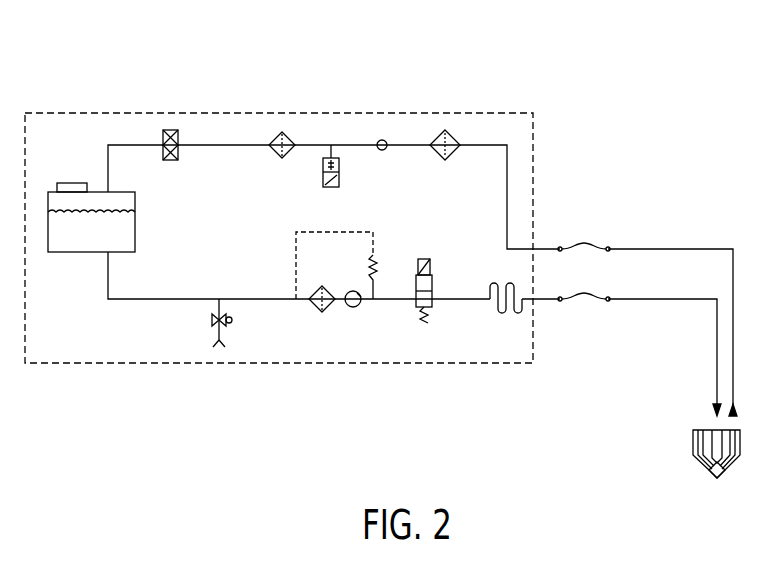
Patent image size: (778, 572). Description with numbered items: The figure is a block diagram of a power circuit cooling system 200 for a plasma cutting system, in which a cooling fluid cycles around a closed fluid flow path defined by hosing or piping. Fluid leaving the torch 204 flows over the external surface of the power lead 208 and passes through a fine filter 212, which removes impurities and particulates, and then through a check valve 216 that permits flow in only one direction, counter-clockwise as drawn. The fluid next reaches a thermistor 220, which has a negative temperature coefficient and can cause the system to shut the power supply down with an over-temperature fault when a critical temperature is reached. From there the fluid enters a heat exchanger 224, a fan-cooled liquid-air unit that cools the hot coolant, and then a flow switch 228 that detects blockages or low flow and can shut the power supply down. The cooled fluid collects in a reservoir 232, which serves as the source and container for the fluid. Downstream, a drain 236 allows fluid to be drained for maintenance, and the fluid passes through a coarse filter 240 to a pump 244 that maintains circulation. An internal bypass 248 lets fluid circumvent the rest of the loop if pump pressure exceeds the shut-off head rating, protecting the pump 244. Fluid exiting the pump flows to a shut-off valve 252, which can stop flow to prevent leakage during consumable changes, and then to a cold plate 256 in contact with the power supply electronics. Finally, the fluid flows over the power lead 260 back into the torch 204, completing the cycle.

The power circuit cooling system 200 is at (593, 70).
The torch 204 is at (696, 457).
The power lead 208 is at (646, 248).
The fine filter 212 is at (452, 134).
The check valve 216 is at (384, 139).
The thermistor 220 is at (340, 176).
The heat exchanger 224 is at (289, 134).
The flow switch 228 is at (172, 129).
The reservoir 232 is at (136, 227).
The drain 236 is at (215, 318).
The coarse filter 240 is at (311, 309).
The pump 244 is at (350, 308).
The internal bypass 248 is at (377, 257).
The shut-off valve 252 is at (433, 288).
The cold plate 256 is at (503, 313).
The power lead 260 is at (639, 301).